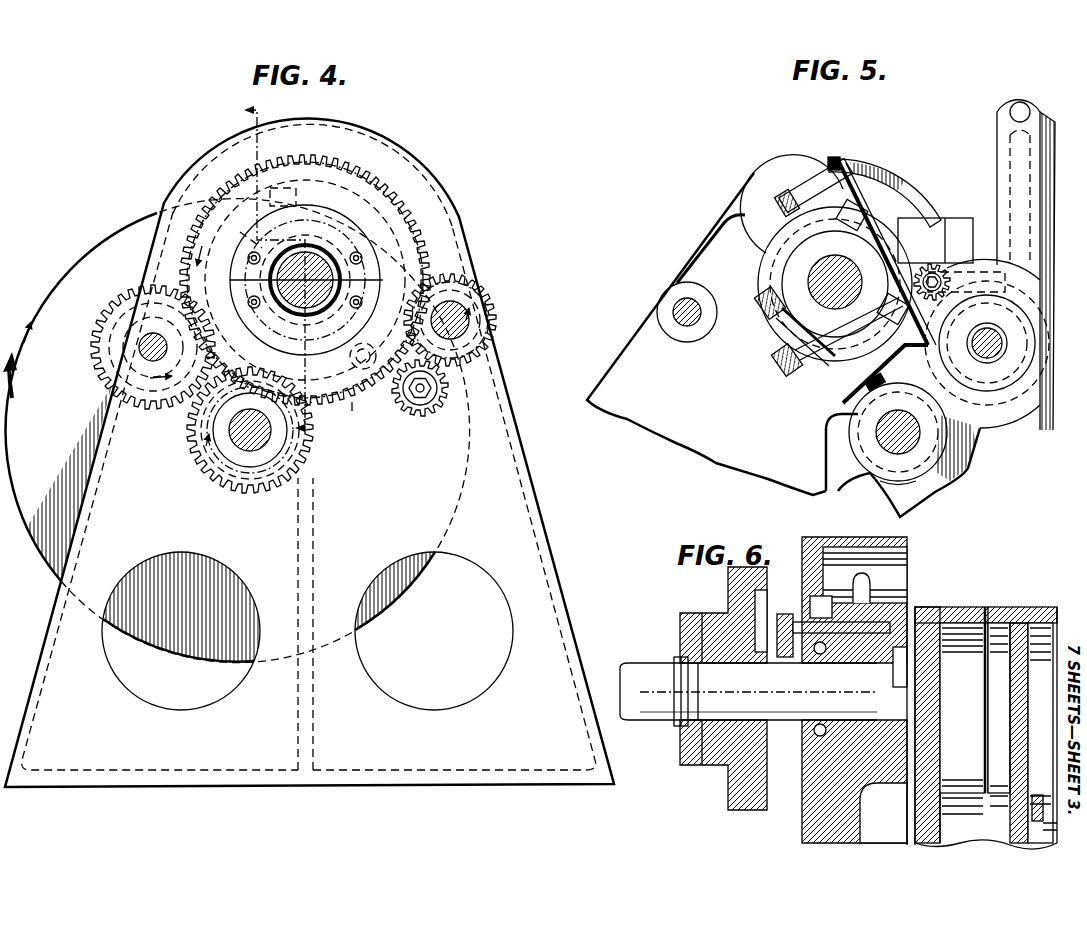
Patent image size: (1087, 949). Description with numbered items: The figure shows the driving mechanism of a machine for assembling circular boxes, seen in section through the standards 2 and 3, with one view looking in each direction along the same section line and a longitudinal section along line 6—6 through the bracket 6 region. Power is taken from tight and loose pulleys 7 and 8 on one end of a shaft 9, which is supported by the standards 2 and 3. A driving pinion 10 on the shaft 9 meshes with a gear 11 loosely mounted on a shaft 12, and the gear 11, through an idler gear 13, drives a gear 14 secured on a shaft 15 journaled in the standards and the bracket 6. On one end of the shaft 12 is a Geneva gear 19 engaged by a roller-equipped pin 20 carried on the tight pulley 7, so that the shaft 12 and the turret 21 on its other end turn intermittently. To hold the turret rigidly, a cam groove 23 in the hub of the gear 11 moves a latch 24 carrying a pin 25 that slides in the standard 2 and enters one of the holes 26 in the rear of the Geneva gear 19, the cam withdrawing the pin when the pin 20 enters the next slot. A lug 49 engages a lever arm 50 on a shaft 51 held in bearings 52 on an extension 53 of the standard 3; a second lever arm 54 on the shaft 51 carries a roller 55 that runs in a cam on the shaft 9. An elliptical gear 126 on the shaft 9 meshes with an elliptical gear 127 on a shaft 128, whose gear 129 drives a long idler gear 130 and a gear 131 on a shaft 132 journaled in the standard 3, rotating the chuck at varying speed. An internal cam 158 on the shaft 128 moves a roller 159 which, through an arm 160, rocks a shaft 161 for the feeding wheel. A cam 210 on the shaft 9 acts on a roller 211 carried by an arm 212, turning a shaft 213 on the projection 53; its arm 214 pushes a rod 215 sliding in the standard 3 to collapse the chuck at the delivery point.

In FIG. 4, the standard 2 is at (309, 453).
In FIG. 6, the standard 2 is at (912, 538).
In FIG. 5, the standard 3 is at (700, 244).
In FIG. 4, the bracket 6 is at (269, 275).
In FIG. 4, the tight pulley 7 is at (236, 431).
In FIG. 6, the tight pulley 7 is at (964, 607).
In FIG. 6, the loose pulley 8 is at (1020, 607).
In FIG. 4, the shaft 9 is at (241, 448).
In FIG. 5, the shaft 9 is at (905, 445).
In FIG. 4, the driving pinion 10 is at (215, 462).
In FIG. 4, the gear 11 is at (352, 402).
In FIG. 6, the gear 11 is at (727, 582).
In FIG. 4, the shaft 12 is at (306, 280).
In FIG. 5, the shaft 12 is at (838, 262).
In FIG. 6, the shaft 12 is at (748, 691).
In FIG. 4, the idler gear 13 is at (418, 408).
In FIG. 4, the gear 14 is at (478, 295).
In FIG. 4, the shaft 15 is at (468, 328).
In FIG. 5, the shaft 15 is at (673, 310).
In FIG. 4, the Geneva gear 19 is at (400, 192).
In FIG. 6, the Geneva gear 19 is at (908, 718).
In FIG. 4, the pin 20 is at (357, 364).
In FIG. 5, the turret 21 is at (880, 178).
In FIG. 6, the cam groove 23 is at (700, 665).
In FIG. 4, the latch 24 is at (243, 242).
In FIG. 6, the latch 24 is at (785, 614).
In FIG. 4, the pin 25 is at (282, 188).
In FIG. 6, the pin 25 is at (810, 600).
In FIG. 6, the holes 26 is at (912, 608).
In FIG. 5, the lug 49 is at (789, 192).
In FIG. 5, the lever arm 50 is at (815, 178).
In FIG. 5, the shaft 51 is at (842, 160).
In FIG. 5, the bearings 52 is at (870, 200).
In FIG. 5, the extension 53 is at (759, 268).
In FIG. 5, the lever arm 54 is at (885, 374).
In FIG. 5, the roller 55 is at (898, 432).
In FIG. 4, the elliptical gear 126 is at (272, 492).
In FIG. 4, the elliptical gear 127 is at (162, 413).
In FIG. 4, the shaft 128 is at (140, 347).
In FIG. 5, the shaft 128 is at (987, 349).
In FIG. 5, the gear 129 is at (1002, 388).
In FIG. 5, the long idler gear 130 is at (956, 383).
In FIG. 5, the gear 131 is at (950, 262).
In FIG. 5, the shaft 132 is at (935, 270).
In FIG. 5, the internal cam 158 is at (1018, 292).
In FIG. 5, the roller 159 is at (988, 343).
In FIG. 5, the arm 160 is at (1012, 158).
In FIG. 5, the shaft 161 is at (1020, 102).
In FIG. 5, the cam 210 is at (900, 481).
In FIG. 5, the roller 211 is at (838, 456).
In FIG. 5, the arm 212 is at (868, 390).
In FIG. 5, the shaft 213 is at (768, 318).
In FIG. 5, the arm 214 is at (790, 345).
In FIG. 5, the rod 215 is at (798, 362).